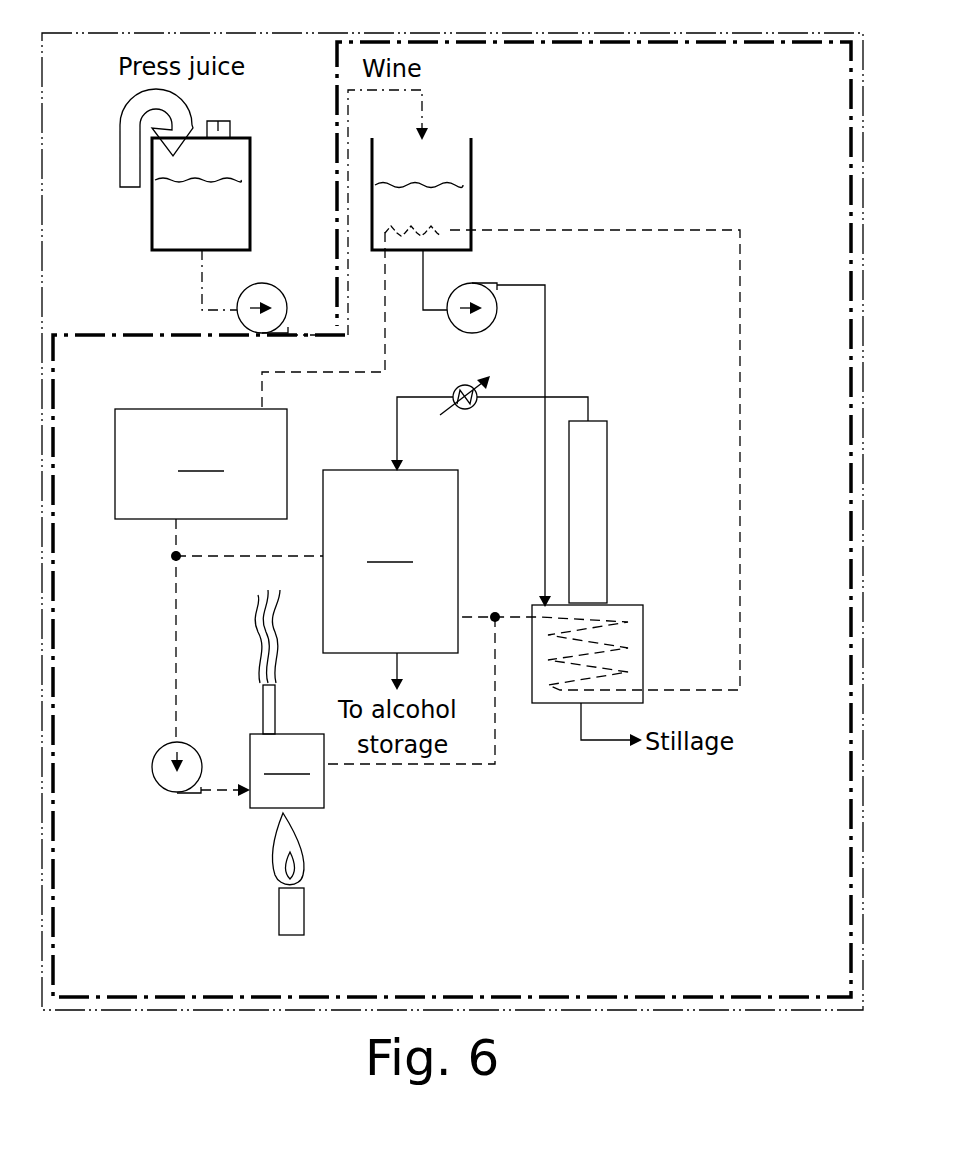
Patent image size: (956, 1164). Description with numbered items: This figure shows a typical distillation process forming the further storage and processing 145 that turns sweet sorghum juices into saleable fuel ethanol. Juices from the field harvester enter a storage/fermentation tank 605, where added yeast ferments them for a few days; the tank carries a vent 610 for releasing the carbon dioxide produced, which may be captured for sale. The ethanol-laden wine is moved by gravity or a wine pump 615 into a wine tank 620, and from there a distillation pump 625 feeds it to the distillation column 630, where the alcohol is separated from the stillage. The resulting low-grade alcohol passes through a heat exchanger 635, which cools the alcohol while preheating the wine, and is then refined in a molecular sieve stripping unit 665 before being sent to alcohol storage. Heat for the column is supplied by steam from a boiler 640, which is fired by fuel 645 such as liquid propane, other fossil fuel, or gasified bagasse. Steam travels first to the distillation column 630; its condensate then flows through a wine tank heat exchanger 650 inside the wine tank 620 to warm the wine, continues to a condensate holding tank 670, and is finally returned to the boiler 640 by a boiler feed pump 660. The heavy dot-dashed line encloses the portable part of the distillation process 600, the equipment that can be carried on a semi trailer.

The further storage and processing 145 is at (452, 500).
The portable part of the distillation process 600 is at (215, 1000).
The storage/fermentation tank 605 is at (238, 200).
The vent 610 is at (232, 128).
The wine pump 615 is at (263, 298).
The wine tank 620 is at (458, 200).
The distillation pump 625 is at (470, 322).
The distillation column 630 is at (660, 546).
The heat exchanger 635 is at (462, 408).
The boiler 640 is at (287, 737).
The fuel 645 is at (286, 905).
The wine tank heat exchanger 650 is at (443, 227).
The boiler feed pump 660 is at (165, 772).
The molecular sieve stripping unit 665 is at (390, 580).
The condensate holding tank 670 is at (201, 464).